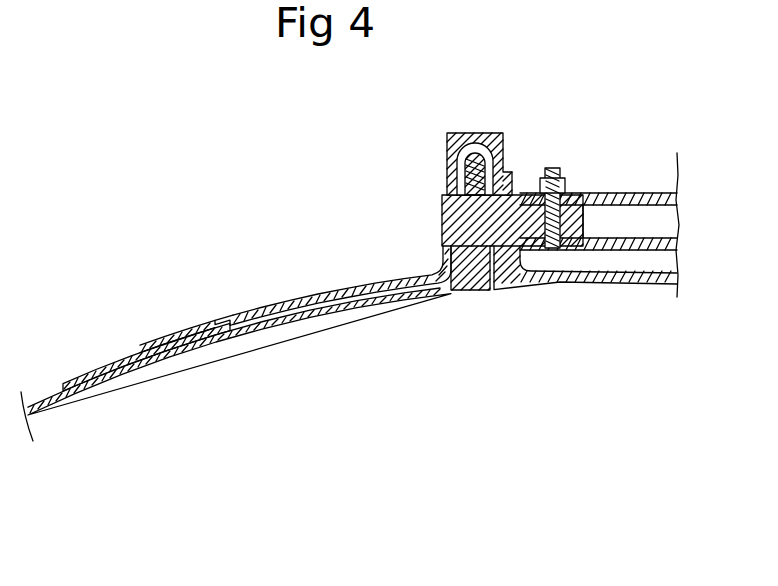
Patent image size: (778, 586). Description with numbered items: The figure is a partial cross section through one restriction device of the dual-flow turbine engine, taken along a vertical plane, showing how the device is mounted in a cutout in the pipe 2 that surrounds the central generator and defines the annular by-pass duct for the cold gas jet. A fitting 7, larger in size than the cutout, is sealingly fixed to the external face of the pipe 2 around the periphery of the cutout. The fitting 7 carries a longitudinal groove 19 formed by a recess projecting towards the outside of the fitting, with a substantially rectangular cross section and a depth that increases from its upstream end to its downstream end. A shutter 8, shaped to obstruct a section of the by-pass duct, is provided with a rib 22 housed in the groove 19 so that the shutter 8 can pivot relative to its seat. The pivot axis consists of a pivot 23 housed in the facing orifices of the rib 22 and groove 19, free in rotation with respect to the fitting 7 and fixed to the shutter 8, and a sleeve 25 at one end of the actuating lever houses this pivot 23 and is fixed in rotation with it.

The pipe 2 is at (236, 315).
The fitting 7 is at (253, 315).
The shutter 8 is at (367, 307).
The longitudinal groove 19 is at (469, 128).
The rib 22 is at (505, 170).
The pivot 23 is at (441, 230).
The sleeve 25 is at (591, 193).